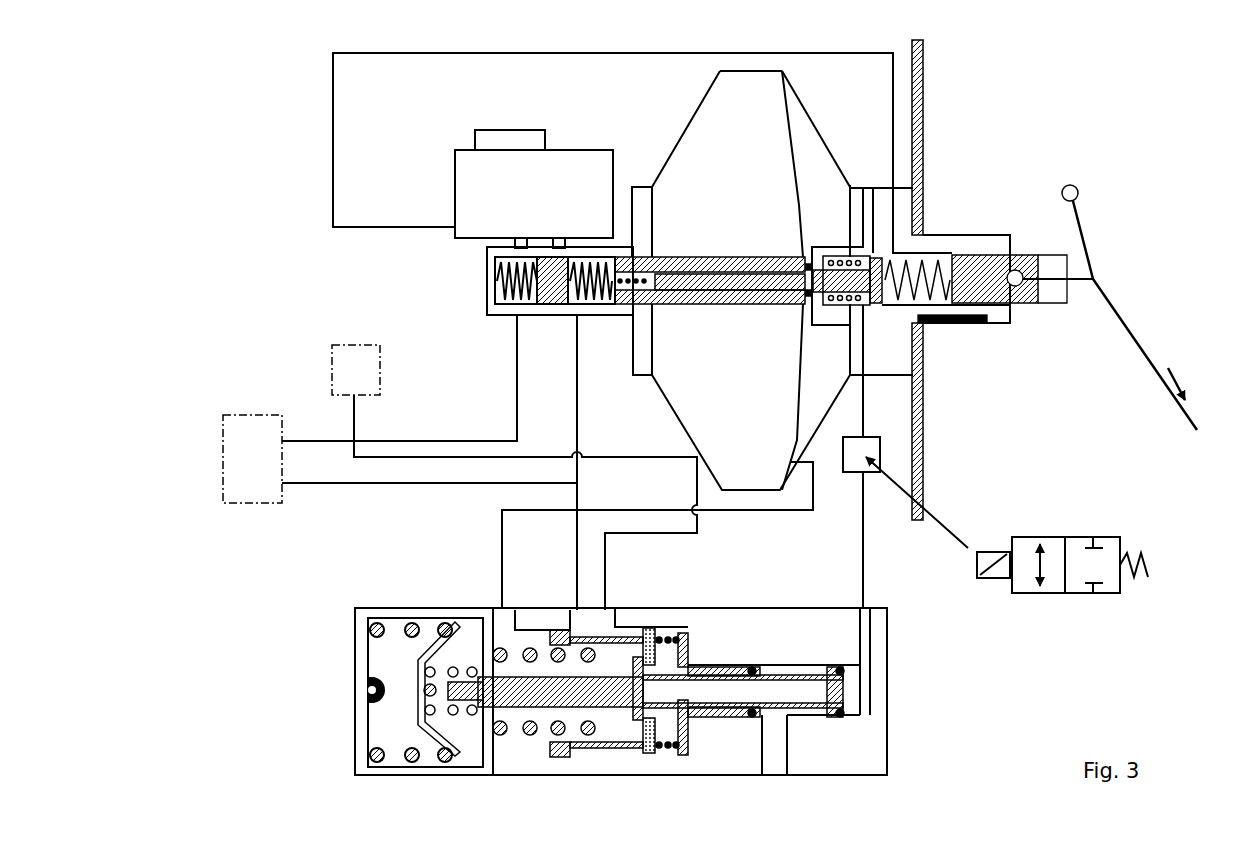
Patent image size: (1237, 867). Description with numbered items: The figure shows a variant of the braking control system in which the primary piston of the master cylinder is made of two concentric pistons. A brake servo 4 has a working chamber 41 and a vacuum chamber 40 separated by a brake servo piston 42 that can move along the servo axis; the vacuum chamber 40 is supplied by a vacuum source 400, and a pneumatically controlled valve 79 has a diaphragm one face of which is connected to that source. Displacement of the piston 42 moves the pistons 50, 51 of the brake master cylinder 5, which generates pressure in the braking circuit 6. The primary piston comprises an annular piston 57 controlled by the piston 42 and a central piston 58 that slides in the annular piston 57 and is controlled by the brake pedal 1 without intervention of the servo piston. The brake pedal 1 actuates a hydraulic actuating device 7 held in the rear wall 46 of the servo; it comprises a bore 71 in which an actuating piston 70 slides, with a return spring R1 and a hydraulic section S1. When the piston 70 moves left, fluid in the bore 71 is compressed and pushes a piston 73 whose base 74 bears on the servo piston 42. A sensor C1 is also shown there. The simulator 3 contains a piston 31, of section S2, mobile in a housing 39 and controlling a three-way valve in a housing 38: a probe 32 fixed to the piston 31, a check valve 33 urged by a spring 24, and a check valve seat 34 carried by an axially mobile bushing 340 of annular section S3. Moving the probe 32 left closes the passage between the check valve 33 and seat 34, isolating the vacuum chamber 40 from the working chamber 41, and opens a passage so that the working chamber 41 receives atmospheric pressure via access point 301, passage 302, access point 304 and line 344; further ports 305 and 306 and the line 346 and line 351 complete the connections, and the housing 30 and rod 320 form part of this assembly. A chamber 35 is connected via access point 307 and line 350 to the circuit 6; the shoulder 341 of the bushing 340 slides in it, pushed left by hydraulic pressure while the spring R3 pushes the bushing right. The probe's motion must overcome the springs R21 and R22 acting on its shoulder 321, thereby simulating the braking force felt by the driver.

The brake pedal 1 is at (1125, 320).
The simulator 3 is at (925, 765).
The brake servo 4 is at (692, 118).
The brake master cylinder 5 is at (484, 290).
The braking circuit 6 is at (250, 414).
The hydraulic actuating device 7 is at (985, 230).
The spring 24 is at (650, 752).
The valve housing 30 is at (826, 775).
The piston 31 is at (857, 680).
The probe 32 is at (596, 755).
The check valve 33 is at (665, 760).
The check valve seat 34 is at (625, 760).
The chamber 35 is at (595, 610).
The housing 38 is at (507, 740).
The housing 39 is at (862, 717).
The vacuum chamber 40 is at (733, 384).
The working chamber 41 is at (831, 379).
The brake servo piston 42 is at (782, 95).
The rear wall 46 is at (818, 122).
The piston 50 is at (637, 185).
The piston 51 is at (548, 316).
The annular piston 57 is at (700, 312).
The central piston 58 is at (700, 340).
The actuating piston 70 is at (1010, 253).
The bore 71 is at (945, 252).
The piston 73 is at (862, 254).
The base 74 is at (828, 257).
The pneumatically controlled valve 79 is at (880, 452).
The access point 301 is at (780, 745).
The passage 302 is at (730, 717).
The access point 304 is at (510, 640).
The bore 305 is at (630, 630).
The line 306 is at (608, 608).
The access point 307 is at (575, 610).
The rod 320 is at (457, 750).
The shoulder 321 is at (450, 720).
The bushing 340 is at (565, 775).
The shoulder 341 is at (560, 625).
The line 344 is at (502, 535).
The line 346 is at (697, 528).
The line 350 is at (575, 425).
The line 351 is at (418, 440).
The vacuum source 400 is at (352, 344).
The sensor C1 is at (955, 325).
The return spring of the actuating piston R1 is at (925, 262).
The simulator spring R21 is at (425, 640).
The simulator spring R22 is at (368, 628).
The spring of the bushing R3 is at (492, 775).
The hydraulic section of the actuating piston S1 is at (1068, 258).
The section of the simulator piston S2 is at (850, 668).
The annular section of the bushing S3 is at (543, 632).